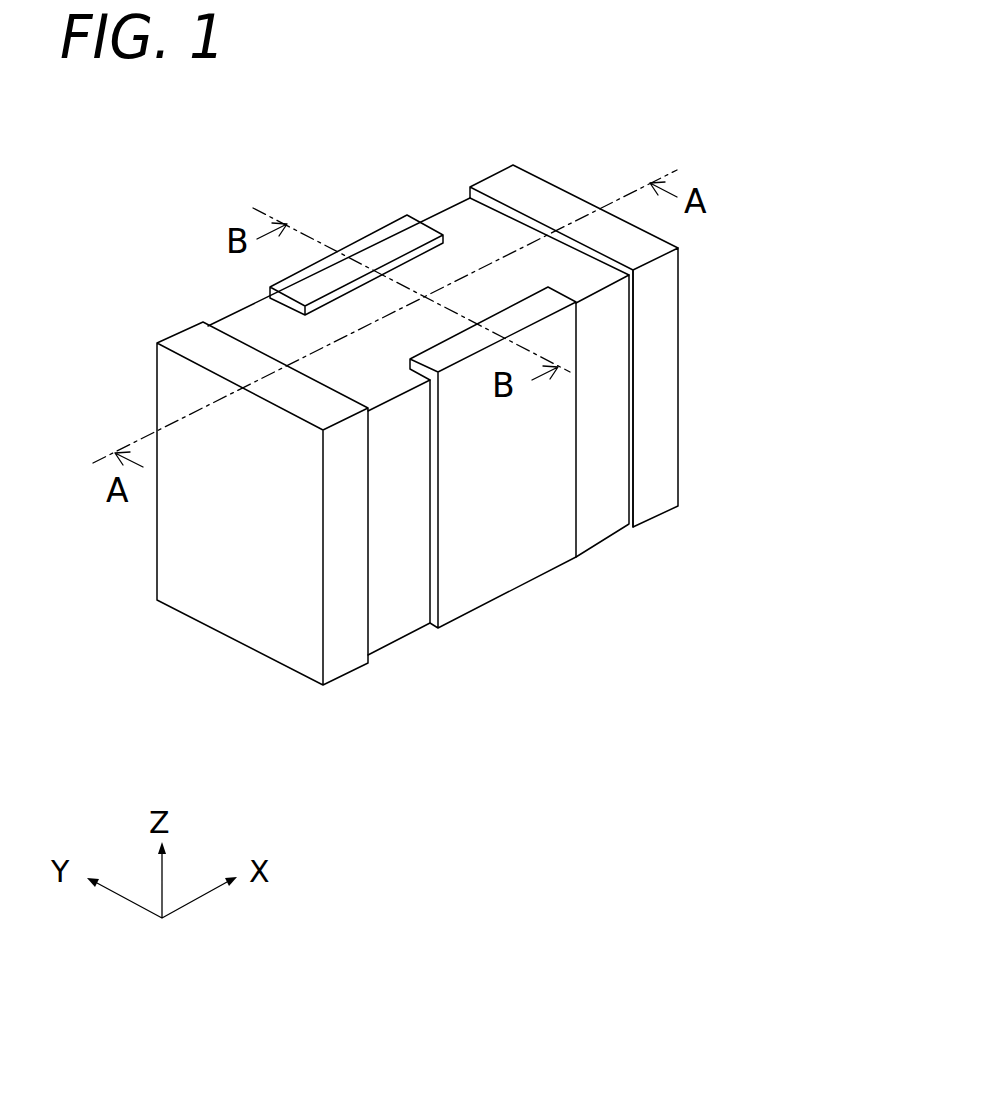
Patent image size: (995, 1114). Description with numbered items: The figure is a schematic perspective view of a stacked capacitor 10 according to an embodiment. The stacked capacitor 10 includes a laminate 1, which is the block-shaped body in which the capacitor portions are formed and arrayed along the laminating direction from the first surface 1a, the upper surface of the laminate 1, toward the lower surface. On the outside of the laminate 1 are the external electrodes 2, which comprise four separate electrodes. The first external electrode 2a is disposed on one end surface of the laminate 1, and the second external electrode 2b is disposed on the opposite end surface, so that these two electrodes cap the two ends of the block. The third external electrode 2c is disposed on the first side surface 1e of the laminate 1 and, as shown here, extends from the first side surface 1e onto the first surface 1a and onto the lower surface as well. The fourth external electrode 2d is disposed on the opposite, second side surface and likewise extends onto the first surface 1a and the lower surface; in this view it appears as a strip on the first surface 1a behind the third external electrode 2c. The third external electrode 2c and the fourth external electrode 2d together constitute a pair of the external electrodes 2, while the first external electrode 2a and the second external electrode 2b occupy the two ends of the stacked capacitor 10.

The stacked capacitor 10 is at (639, 90).
The laminate 1 is at (462, 233).
The first surface 1a is at (257, 337).
The first side surface 1e is at (668, 347).
The external electrodes 2 is at (615, 748).
The first external electrode 2a is at (315, 643).
The second external electrode 2b is at (650, 493).
The third external electrode 2c is at (495, 567).
The fourth external electrode 2d is at (318, 287).